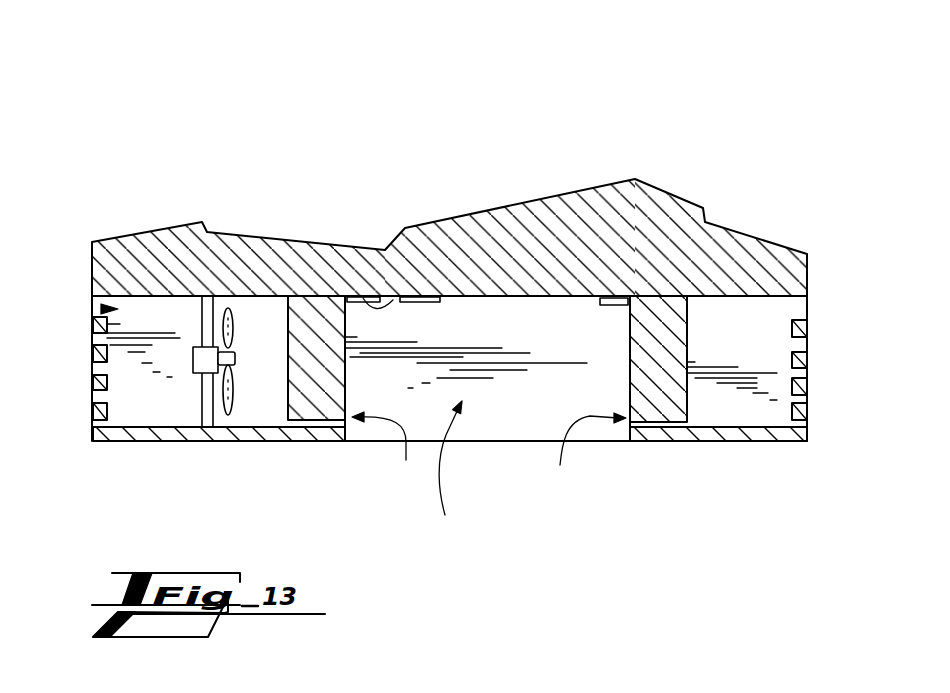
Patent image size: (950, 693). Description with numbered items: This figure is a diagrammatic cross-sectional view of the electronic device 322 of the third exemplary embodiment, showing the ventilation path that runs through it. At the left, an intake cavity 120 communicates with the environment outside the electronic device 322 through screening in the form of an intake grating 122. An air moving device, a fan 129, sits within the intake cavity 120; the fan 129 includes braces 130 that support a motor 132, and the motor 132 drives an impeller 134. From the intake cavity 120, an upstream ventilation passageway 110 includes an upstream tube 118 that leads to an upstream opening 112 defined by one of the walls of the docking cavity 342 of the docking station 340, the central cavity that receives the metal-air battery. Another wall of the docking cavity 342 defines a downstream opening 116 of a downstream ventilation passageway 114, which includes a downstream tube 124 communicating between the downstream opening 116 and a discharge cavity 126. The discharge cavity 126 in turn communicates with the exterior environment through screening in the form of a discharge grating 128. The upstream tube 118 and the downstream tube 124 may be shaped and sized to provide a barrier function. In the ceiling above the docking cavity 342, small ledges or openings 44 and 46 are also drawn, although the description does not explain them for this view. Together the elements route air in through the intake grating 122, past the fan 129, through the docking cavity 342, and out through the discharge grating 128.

The electronic device 322 is at (750, 174).
The intake cavity 120 is at (92, 313).
The intake grating 122 is at (92, 357).
The upstream tube 118 is at (298, 442).
The braces 130 is at (205, 317).
The motor 132 is at (176, 338).
The fan 129 is at (226, 290).
The impeller 134 is at (232, 399).
The ceiling openings 44 is at (393, 303).
The ceiling ledge 46 is at (412, 303).
The docking station 340 is at (502, 408).
The docking cavity 342 is at (448, 475).
The upstream ventilation passageway 110 is at (389, 454).
The upstream opening 112 is at (346, 428).
The downstream ventilation passageway 114 is at (584, 455).
The downstream opening 116 is at (630, 428).
The downstream tube 124 is at (660, 443).
The discharge cavity 126 is at (757, 323).
The discharge grating 128 is at (806, 333).